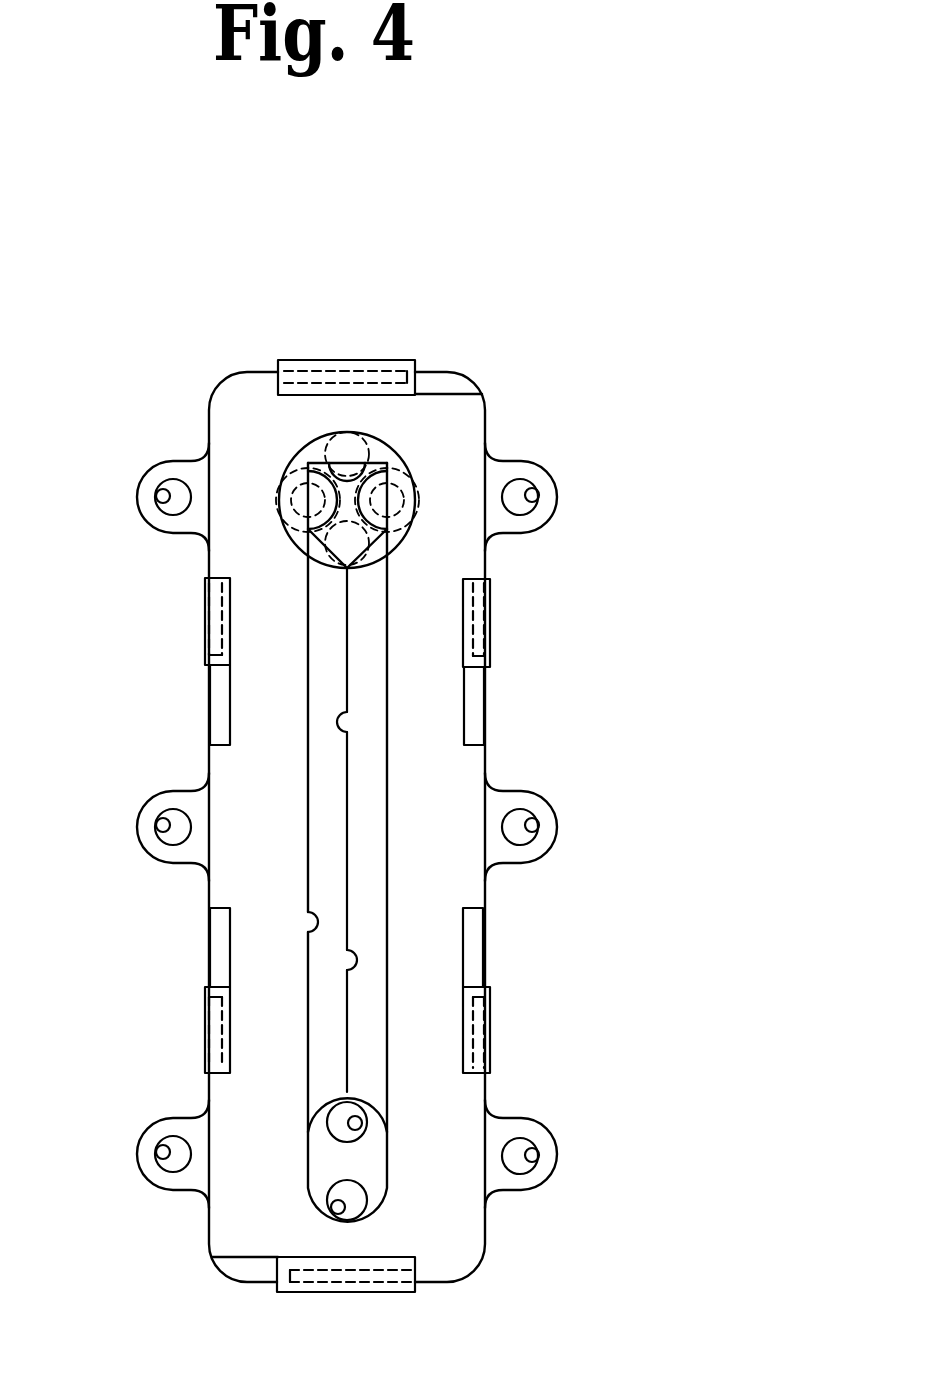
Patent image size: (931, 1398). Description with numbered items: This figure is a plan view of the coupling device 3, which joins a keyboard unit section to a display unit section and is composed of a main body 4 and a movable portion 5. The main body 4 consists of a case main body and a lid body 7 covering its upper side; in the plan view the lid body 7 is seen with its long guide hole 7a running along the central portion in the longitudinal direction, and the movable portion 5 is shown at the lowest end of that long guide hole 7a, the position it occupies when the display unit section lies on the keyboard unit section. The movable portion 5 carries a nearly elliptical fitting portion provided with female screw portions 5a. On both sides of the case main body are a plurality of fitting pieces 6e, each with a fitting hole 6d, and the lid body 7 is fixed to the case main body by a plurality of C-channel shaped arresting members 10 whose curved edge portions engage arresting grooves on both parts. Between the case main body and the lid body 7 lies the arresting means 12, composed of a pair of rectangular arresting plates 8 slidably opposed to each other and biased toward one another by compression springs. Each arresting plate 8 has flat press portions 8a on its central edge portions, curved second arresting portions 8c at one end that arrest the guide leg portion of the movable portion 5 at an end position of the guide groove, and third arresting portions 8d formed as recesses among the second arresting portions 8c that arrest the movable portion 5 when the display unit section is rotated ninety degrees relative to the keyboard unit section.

The coupling device 3 is at (523, 688).
The main body 4 is at (484, 922).
The movable portion 5 is at (315, 1167).
The female screw portions 5a is at (355, 1127).
The fitting holes 6d is at (160, 490).
The fitting pieces 6e is at (143, 518).
The lid body 7 is at (457, 773).
The long guide hole 7a is at (235, 765).
The arresting plates 8 is at (327, 662).
The flat press portions 8a is at (347, 732).
The second arresting portions 8c is at (318, 476).
The third arresting portions 8d is at (347, 487).
The arresting members 10 is at (333, 360).
The arresting means 12 is at (358, 600).